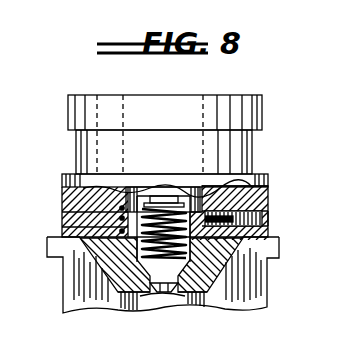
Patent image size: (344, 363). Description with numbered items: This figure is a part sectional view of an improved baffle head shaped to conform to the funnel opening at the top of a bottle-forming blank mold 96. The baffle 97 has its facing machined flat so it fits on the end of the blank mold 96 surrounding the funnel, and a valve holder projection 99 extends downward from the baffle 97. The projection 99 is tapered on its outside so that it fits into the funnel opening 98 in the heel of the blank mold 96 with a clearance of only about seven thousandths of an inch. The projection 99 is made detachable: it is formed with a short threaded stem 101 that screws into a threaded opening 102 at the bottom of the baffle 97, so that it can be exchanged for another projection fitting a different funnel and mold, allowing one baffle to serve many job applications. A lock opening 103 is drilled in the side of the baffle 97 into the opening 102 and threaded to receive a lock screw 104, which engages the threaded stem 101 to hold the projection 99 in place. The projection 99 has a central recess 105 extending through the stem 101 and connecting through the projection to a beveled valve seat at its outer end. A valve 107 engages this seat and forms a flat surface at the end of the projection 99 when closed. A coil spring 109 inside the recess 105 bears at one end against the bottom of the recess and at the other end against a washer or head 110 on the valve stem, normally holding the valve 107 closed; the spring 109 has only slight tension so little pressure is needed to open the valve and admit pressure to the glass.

The blank mold 96 is at (250, 293).
The baffle 97 is at (77, 150).
The funnel opening 98 is at (105, 271).
The valve holder projection 99 is at (113, 253).
The threaded stem 101 is at (165, 210).
The opening 102 is at (237, 193).
The lock opening 103 is at (263, 211).
The lock screw 104 is at (268, 219).
The central recess 105 is at (62, 227).
The valve 107 is at (162, 284).
The coil spring 109 is at (168, 215).
The washer or head 110 is at (157, 196).